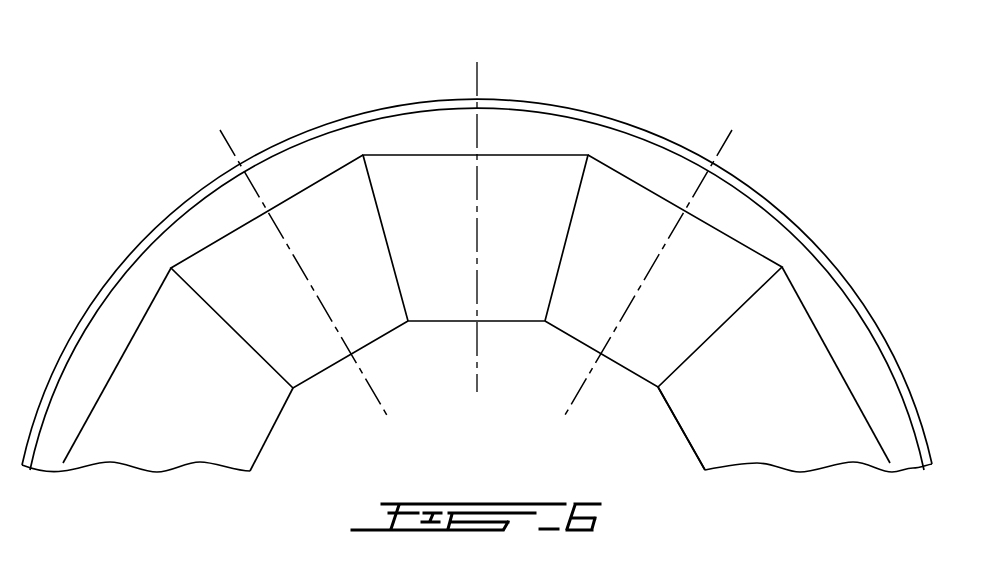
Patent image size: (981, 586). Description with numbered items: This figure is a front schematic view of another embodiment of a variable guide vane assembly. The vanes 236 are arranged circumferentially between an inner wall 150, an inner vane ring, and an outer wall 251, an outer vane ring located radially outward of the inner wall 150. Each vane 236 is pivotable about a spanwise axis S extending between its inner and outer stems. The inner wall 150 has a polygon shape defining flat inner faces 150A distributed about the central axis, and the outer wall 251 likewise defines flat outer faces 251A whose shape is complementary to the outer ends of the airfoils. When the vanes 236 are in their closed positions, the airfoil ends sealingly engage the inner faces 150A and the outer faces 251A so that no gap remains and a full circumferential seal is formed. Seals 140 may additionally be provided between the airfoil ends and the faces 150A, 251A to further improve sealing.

The seal 140 is at (728, 323).
The inner wall 150 is at (679, 446).
The inner face 150A is at (265, 443).
The vane 236 is at (431, 199).
The outer wall 251 is at (822, 285).
The outer face 251A is at (547, 155).
The spanwise axis S is at (480, 70).